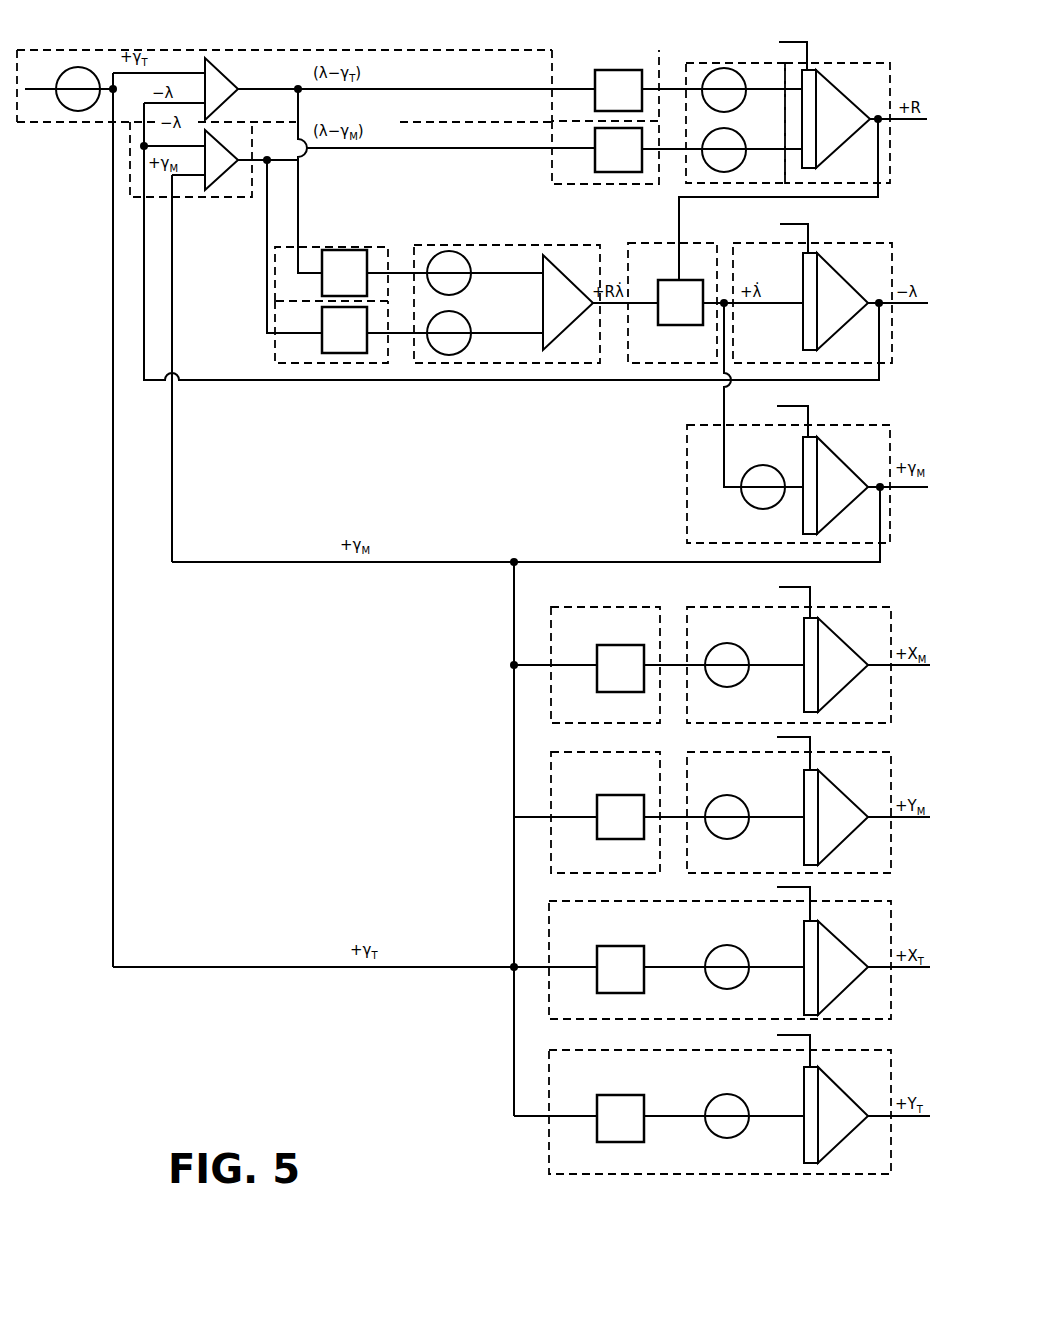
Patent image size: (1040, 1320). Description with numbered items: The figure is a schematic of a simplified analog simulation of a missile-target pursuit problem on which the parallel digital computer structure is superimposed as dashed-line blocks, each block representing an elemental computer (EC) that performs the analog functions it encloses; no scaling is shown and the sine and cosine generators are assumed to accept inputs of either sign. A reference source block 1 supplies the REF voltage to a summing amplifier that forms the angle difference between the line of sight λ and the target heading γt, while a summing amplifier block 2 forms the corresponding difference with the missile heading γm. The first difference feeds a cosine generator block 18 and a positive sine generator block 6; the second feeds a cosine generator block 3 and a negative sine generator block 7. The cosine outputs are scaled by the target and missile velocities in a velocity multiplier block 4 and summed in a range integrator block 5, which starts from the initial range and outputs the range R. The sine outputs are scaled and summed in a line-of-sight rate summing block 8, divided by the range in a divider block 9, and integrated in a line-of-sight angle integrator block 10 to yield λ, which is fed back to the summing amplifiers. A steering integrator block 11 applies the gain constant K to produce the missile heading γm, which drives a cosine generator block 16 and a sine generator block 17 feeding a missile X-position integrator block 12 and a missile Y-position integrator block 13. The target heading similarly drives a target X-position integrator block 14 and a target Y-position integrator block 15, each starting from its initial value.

The reference source block 1 is at (284, 86).
The summing amplifier block 2 is at (191, 159).
The cosine generator block 3 is at (605, 152).
The velocity multiplier block 4 is at (735, 111).
The range integrator block 5 is at (822, 101).
The positive sine generator block 6 is at (331, 274).
The negative sine generator block 7 is at (331, 332).
The line-of-sight rate summing block 8 is at (507, 293).
The divider block 9 is at (672, 303).
The line-of-sight angle integrator block 10 is at (812, 283).
The steering integrator block 11 is at (788, 465).
The missile X-position integrator block 12 is at (789, 646).
The missile Y-position integrator block 13 is at (789, 801).
The target X-position integrator block 14 is at (720, 949).
The target Y-position integrator block 15 is at (720, 1100).
The cosine generator block 16 is at (605, 665).
The sine generator block 17 is at (605, 812).
The cosine generator block 18 is at (605, 85).